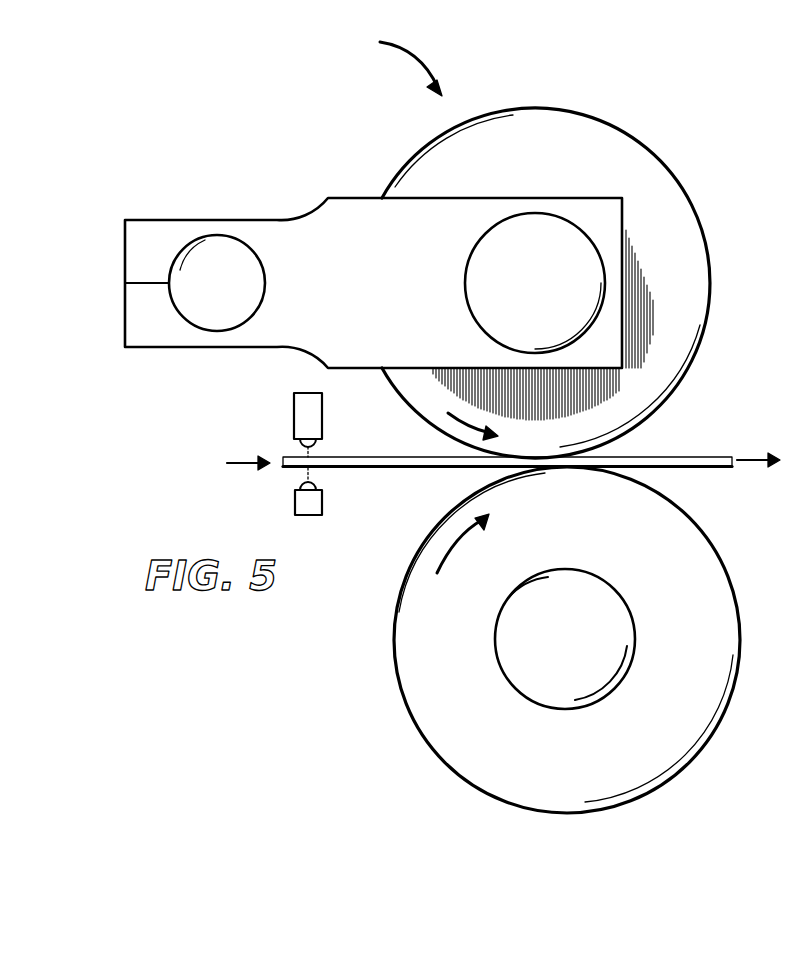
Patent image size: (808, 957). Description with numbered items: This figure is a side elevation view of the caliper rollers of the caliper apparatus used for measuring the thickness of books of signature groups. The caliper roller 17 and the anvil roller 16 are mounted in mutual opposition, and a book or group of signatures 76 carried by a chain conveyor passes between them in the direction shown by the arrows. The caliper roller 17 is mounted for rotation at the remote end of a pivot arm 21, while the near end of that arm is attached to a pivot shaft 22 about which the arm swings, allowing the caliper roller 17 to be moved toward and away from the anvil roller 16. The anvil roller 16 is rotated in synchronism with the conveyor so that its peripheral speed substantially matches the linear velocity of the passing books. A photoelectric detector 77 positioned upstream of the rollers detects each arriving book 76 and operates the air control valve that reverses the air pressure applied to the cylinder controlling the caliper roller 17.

The caliper roller 17 is at (677, 178).
The pivot arm 21 is at (278, 218).
The book or group of signatures 76 is at (710, 457).
The photoelectric detector 77 is at (294, 415).
The anvil roller 16 is at (398, 682).
The pivot shaft 22 is at (505, 678).